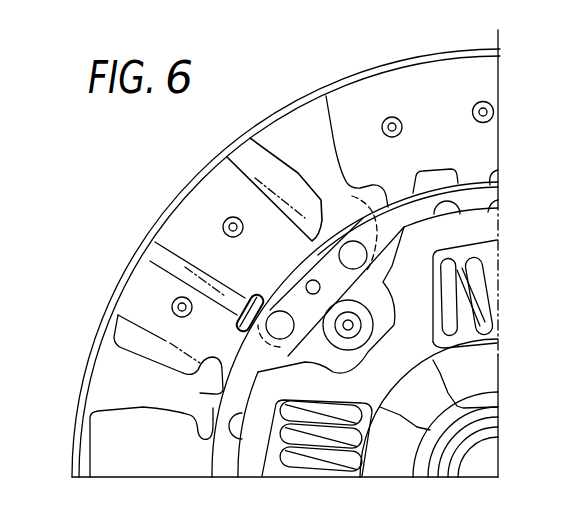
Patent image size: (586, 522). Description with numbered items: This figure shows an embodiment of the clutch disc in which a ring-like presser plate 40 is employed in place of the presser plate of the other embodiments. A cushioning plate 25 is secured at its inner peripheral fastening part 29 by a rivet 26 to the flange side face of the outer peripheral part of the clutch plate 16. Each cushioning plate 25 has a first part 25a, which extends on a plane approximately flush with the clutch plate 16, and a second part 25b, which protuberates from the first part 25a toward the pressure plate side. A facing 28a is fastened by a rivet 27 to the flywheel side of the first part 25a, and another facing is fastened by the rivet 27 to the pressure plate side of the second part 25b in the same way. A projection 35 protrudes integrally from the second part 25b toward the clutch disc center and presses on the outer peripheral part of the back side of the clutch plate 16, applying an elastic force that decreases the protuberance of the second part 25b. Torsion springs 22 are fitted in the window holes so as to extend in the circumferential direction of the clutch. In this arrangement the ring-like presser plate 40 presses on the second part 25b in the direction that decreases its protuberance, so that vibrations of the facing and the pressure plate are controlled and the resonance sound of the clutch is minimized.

The clutch plate 16 is at (196, 416).
The torsion spring 22 is at (485, 318).
The cushioning plate 25 is at (261, 152).
The first part 25a is at (185, 217).
The second part 25b is at (144, 307).
The rivet 26 is at (272, 313).
The rivet 27 is at (181, 296).
The facing 28a is at (110, 365).
The inner peripheral fastening part 29 is at (352, 231).
The projection 35 is at (200, 393).
The ring-like presser plate 40 is at (222, 465).